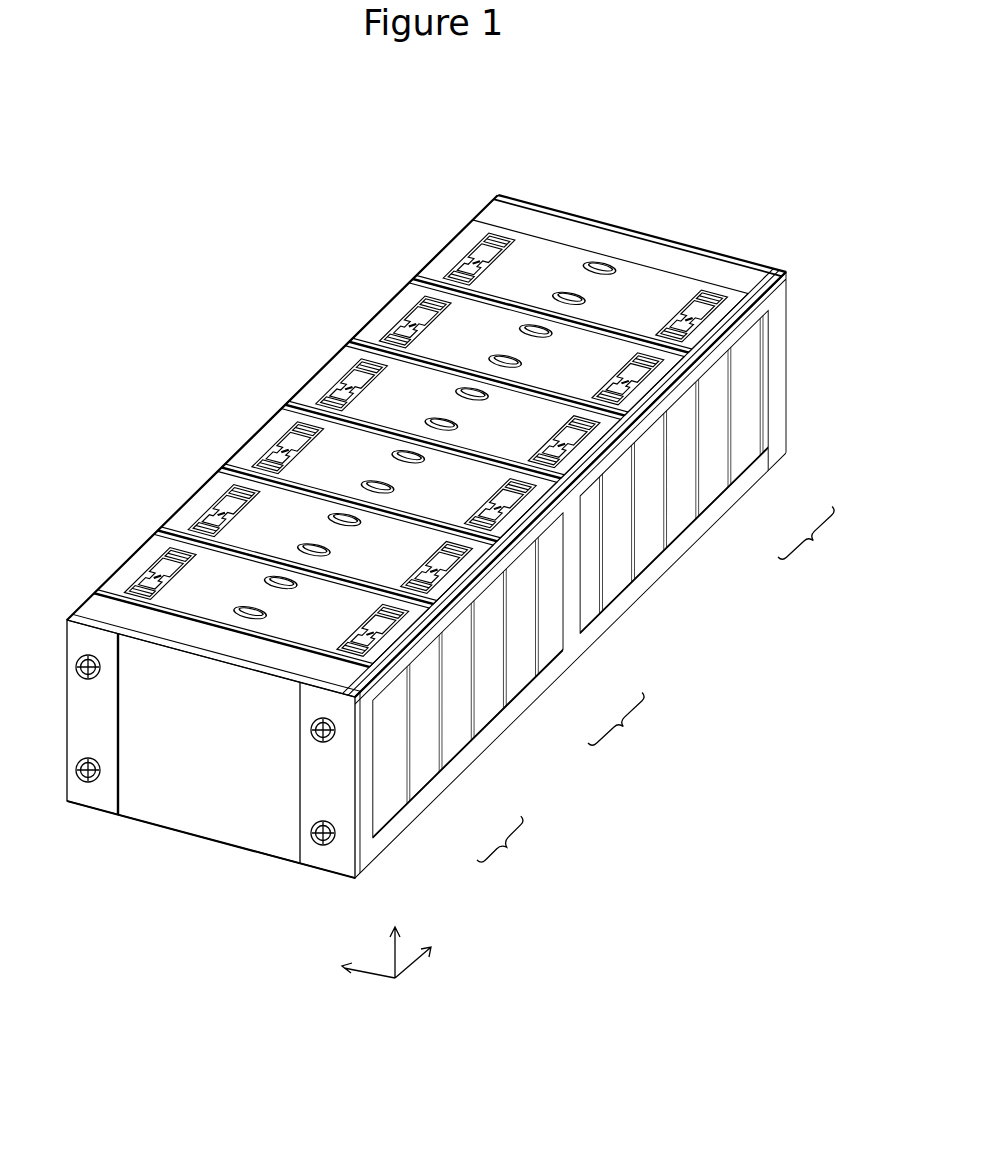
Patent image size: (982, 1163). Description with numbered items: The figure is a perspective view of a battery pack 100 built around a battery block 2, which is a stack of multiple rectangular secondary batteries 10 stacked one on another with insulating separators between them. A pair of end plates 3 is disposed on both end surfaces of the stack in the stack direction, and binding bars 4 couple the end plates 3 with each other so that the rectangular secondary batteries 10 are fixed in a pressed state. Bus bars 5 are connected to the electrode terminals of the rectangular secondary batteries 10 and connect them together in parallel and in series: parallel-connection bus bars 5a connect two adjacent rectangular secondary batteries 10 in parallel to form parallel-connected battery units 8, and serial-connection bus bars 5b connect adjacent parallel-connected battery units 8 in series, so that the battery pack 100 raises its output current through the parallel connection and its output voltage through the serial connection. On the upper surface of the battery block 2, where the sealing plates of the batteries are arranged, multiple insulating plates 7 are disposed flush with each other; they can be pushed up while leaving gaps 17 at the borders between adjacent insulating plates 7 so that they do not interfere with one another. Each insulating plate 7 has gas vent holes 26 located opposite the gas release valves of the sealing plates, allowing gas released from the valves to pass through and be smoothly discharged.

The battery pack 100 is at (189, 182).
The battery block 2 is at (488, 892).
The end plate 3 is at (668, 243).
The binding bar 4 is at (77, 700).
The bus bar 5 is at (319, 217).
The parallel-connection bus bar 5a is at (455, 237).
The serial-connection bus bar 5b is at (425, 268).
The insulating plate 7 is at (298, 500).
The parallel-connected battery unit 8 is at (658, 688).
The rectangular secondary battery 10 is at (518, 680).
The gap 17 is at (626, 317).
The gas vent hole 26 is at (349, 509).